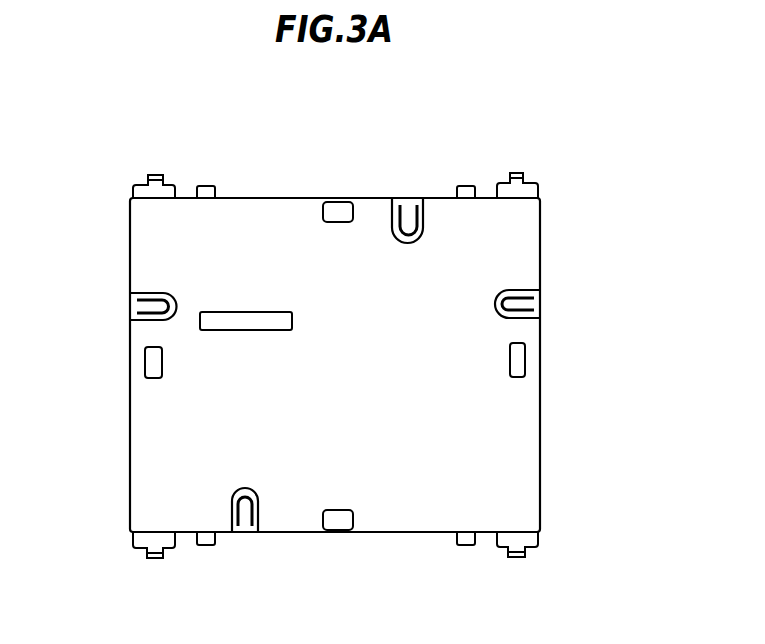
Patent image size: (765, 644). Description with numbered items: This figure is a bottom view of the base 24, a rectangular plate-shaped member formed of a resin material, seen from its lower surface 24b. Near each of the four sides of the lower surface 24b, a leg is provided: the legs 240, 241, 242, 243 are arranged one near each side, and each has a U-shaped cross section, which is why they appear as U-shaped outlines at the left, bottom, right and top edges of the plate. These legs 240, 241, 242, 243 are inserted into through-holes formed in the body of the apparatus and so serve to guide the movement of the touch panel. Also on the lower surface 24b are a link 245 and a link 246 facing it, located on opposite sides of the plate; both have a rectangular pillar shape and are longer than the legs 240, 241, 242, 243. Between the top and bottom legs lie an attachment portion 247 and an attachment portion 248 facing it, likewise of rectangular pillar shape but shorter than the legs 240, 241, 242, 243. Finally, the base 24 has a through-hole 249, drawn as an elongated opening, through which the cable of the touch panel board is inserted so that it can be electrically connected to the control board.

The base 24 is at (354, 338).
The lower surface of the base 24b is at (530, 268).
The leg 240 is at (137, 295).
The leg 241 is at (233, 528).
The leg 242 is at (535, 295).
The leg 243 is at (420, 208).
The link 245 is at (150, 358).
The link 246 is at (518, 357).
The attachment portion 247 is at (342, 208).
The attachment portion 248 is at (335, 522).
The through-hole 249 is at (217, 320).